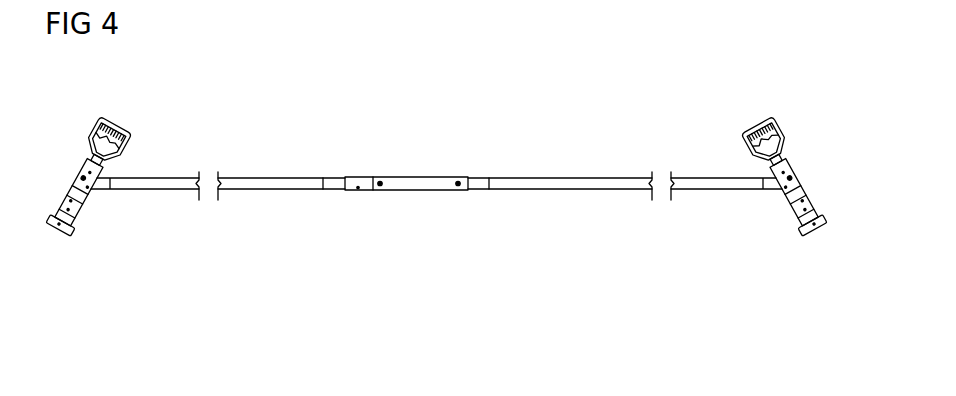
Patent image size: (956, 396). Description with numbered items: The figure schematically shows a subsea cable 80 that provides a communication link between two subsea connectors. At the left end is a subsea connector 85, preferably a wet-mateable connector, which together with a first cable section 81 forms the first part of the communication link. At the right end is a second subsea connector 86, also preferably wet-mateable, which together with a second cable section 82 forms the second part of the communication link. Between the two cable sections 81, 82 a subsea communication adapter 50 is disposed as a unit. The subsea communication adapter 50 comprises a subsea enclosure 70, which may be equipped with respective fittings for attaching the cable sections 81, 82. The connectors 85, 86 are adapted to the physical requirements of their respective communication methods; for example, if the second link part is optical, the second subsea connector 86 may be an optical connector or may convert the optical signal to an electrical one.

The subsea communication adapter 50 is at (390, 162).
The subsea enclosure 70 is at (425, 177).
The subsea cable 80 is at (412, 263).
The first cable section 81 is at (273, 177).
The second cable section 82 is at (571, 177).
The subsea connector 85 is at (76, 174).
The second subsea connector 86 is at (797, 174).